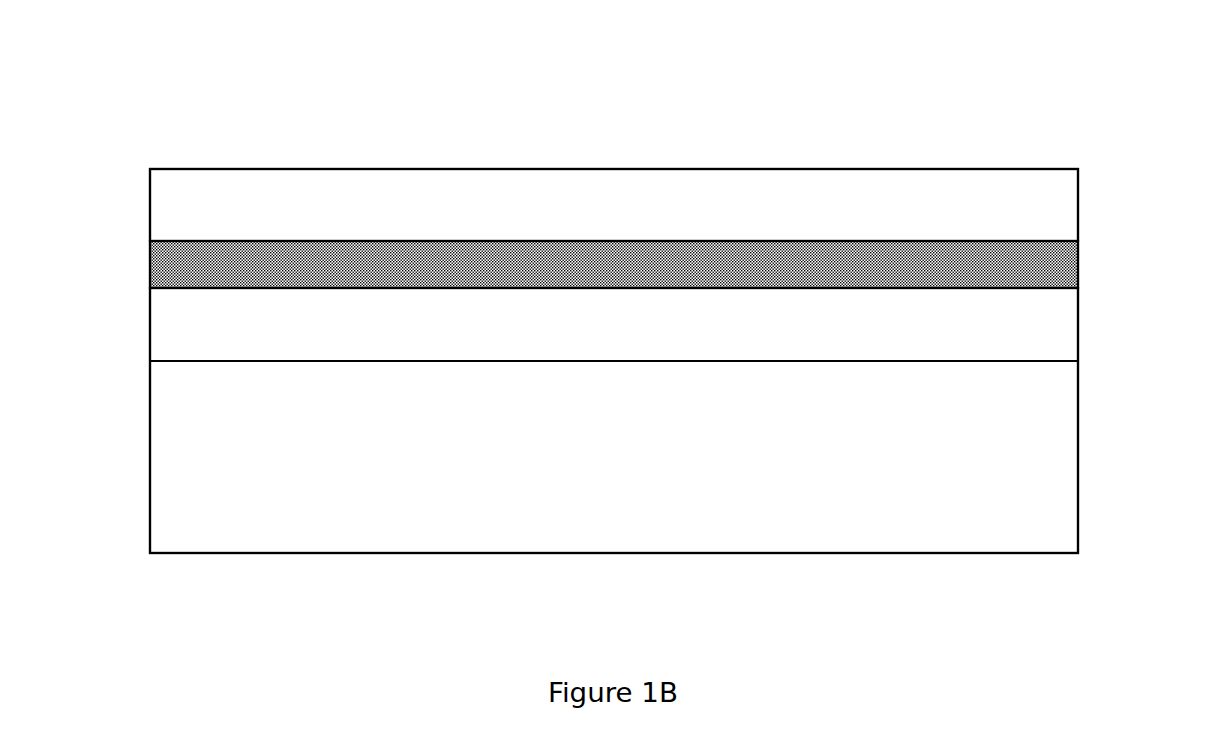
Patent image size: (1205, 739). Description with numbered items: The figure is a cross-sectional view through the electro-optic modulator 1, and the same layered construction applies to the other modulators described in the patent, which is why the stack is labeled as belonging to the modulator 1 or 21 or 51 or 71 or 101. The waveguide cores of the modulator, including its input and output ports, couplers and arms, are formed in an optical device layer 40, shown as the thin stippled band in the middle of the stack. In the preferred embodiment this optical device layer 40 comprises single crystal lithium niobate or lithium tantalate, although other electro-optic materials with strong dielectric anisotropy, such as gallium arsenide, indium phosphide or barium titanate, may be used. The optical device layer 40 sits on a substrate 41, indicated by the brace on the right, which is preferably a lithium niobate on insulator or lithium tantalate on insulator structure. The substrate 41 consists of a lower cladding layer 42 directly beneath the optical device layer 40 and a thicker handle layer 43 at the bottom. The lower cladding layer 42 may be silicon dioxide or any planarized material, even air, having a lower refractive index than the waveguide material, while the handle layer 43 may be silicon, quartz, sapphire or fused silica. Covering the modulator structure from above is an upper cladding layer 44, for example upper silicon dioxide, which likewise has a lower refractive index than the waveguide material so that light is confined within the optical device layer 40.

The modulator 1 is at (498, 96).
The light-emitting device 21 is at (614, 361).
The light-emitting device 51 is at (614, 361).
The light-emitting device 71 is at (614, 361).
The light-emitting device 101 is at (614, 361).
The optical device layer 40 is at (151, 265).
The substrate 41 is at (1103, 287).
The lower cladding layer 42 is at (171, 327).
The handle layer 43 is at (883, 530).
The upper cladding layer 44 is at (817, 198).